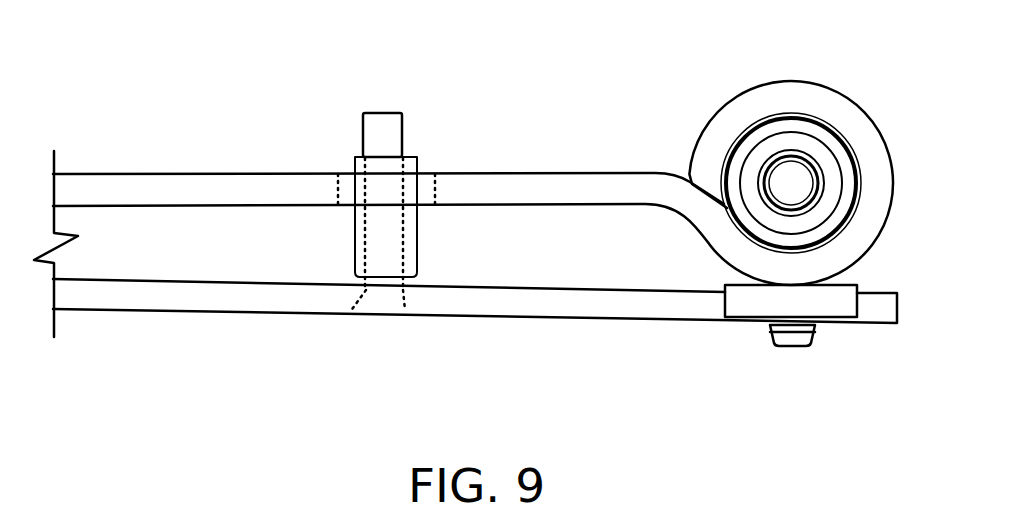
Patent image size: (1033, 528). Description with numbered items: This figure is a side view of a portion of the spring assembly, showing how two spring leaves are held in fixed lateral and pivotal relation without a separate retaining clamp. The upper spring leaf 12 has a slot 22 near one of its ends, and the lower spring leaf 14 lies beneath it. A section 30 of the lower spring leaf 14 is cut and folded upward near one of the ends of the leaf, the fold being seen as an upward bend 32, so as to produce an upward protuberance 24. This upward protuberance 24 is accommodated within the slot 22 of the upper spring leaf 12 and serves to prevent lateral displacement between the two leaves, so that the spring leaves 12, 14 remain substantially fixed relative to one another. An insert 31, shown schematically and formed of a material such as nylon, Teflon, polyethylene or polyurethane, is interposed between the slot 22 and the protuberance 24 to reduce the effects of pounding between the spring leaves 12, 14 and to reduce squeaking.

The spring leaf 12 is at (205, 191).
The spring leaf 14 is at (208, 297).
The slot 22 is at (428, 183).
The upward protuberance 24 is at (380, 130).
The section 30 is at (387, 238).
The insert 31 is at (413, 157).
The upward bend 32 is at (400, 307).